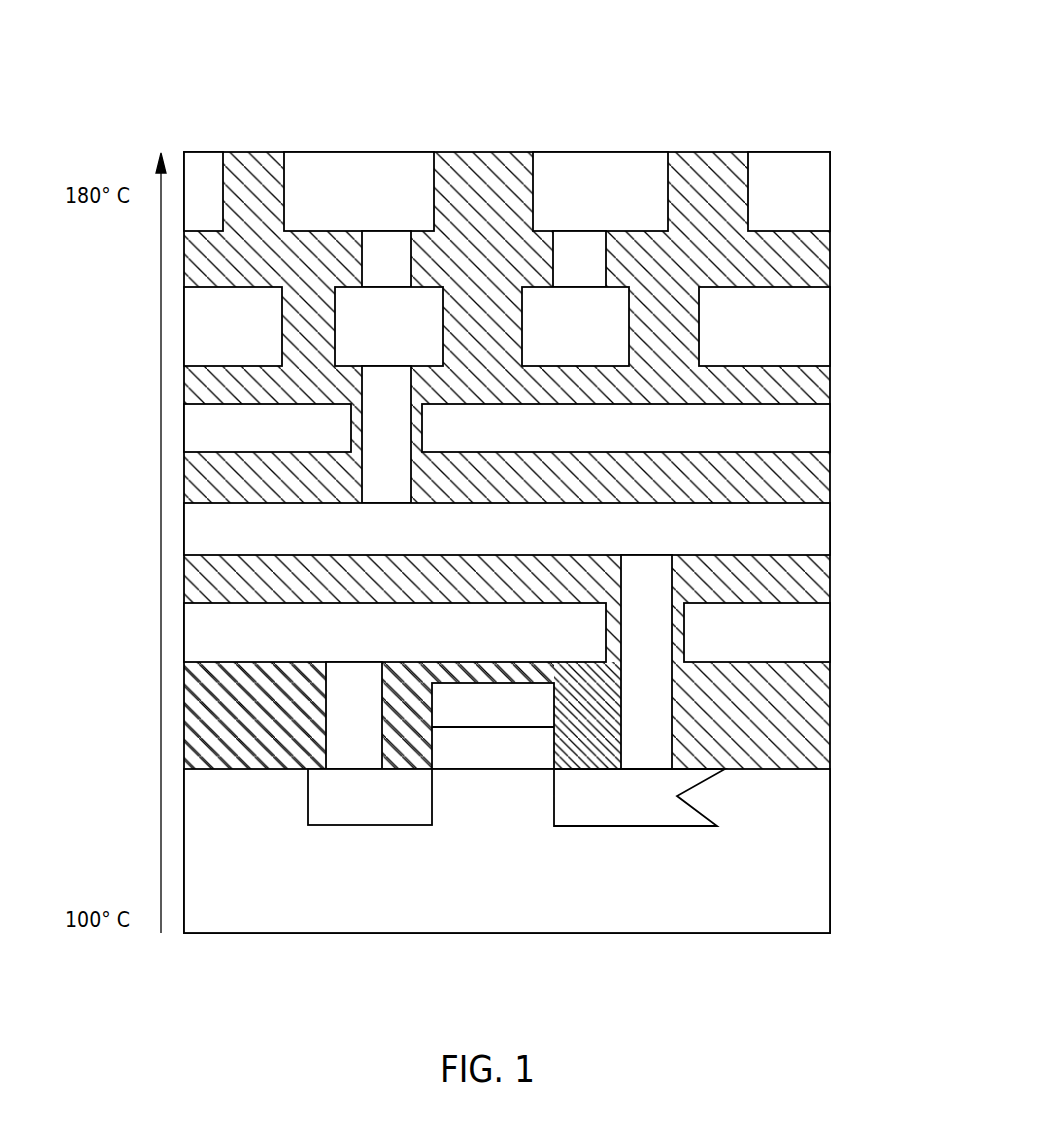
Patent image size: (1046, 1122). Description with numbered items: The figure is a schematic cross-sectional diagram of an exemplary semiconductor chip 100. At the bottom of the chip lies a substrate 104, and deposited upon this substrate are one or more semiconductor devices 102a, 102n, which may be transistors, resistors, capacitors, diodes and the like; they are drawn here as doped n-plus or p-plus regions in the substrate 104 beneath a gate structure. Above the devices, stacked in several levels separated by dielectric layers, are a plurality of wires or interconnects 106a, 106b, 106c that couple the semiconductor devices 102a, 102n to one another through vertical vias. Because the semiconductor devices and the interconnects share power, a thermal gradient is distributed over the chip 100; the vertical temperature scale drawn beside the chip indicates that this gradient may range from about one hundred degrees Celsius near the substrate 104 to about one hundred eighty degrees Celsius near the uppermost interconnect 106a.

The semiconductor chip 100 is at (234, 74).
The semiconductor device 102a is at (308, 809).
The semiconductor device 102n is at (554, 809).
The substrate 104 is at (424, 914).
The interconnect 106a is at (784, 207).
The interconnect 106b is at (784, 334).
The interconnect 106c is at (785, 646).